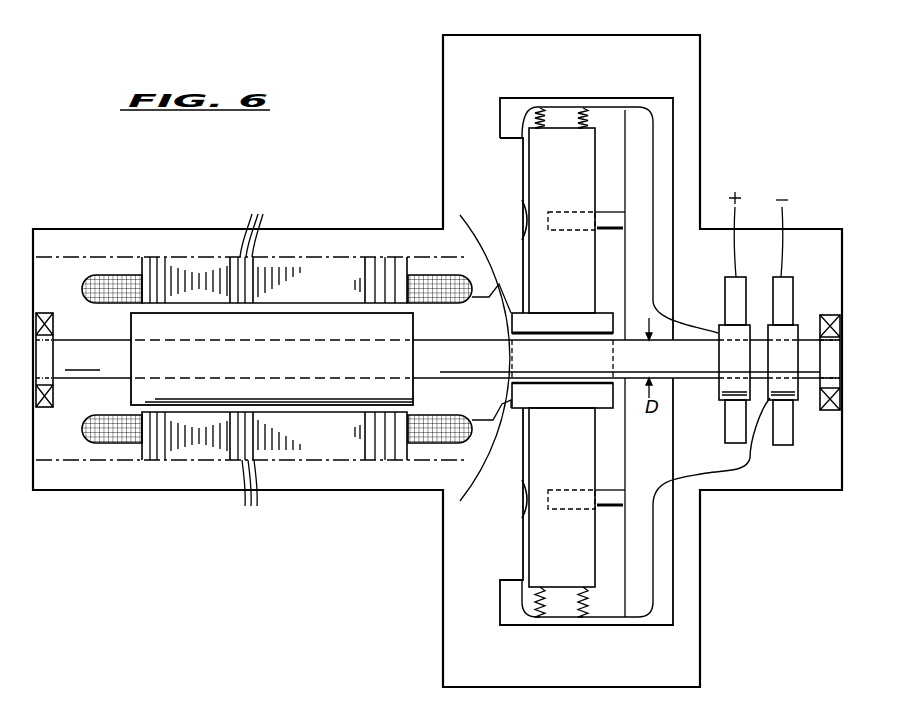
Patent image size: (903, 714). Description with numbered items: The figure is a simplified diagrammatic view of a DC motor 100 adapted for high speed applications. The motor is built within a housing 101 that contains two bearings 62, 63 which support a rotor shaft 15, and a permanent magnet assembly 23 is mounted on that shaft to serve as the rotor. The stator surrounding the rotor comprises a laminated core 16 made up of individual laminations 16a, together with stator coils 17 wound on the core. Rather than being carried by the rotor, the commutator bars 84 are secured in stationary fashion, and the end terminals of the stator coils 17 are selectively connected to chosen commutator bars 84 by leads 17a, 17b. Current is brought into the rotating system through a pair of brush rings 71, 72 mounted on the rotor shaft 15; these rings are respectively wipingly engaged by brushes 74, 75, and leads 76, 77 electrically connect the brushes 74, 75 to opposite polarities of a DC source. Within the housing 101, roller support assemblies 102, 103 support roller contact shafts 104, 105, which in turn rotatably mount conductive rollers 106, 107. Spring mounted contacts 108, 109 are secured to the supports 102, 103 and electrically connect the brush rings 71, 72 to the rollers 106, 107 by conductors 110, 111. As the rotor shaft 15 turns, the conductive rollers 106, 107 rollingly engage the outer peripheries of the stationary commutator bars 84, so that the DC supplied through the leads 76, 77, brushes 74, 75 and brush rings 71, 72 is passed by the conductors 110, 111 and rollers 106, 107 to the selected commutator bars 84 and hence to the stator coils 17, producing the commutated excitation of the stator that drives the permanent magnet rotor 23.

The rotor shaft 15 is at (77, 371).
The laminated core 16 is at (307, 252).
The laminations 16a is at (261, 360).
The stator coils 17 is at (113, 291).
The lead 17a is at (489, 284).
The lead 17b is at (492, 408).
The permanent magnet assembly 23 is at (268, 371).
The bearing 62 is at (44, 313).
The bearing 63 is at (832, 310).
The brush ring 71 is at (722, 393).
The brush ring 72 is at (797, 396).
The brush 74 is at (725, 300).
The brush 75 is at (793, 298).
The lead 76 is at (735, 257).
The lead 77 is at (785, 258).
The commutator bars 84 is at (608, 312).
The DC motor 100 is at (283, 593).
The housing 101 is at (445, 80).
The roller support assembly 102 is at (665, 86).
The roller support assembly 103 is at (625, 628).
The roller contact shaft 104 is at (622, 202).
The roller contact shaft 105 is at (608, 512).
The conductive roller 106 is at (582, 173).
The conductive roller 107 is at (585, 462).
The spring mounted contact 108 is at (520, 222).
The spring mounted contact 109 is at (517, 503).
The conductor 110 is at (653, 158).
The conductor 111 is at (675, 552).